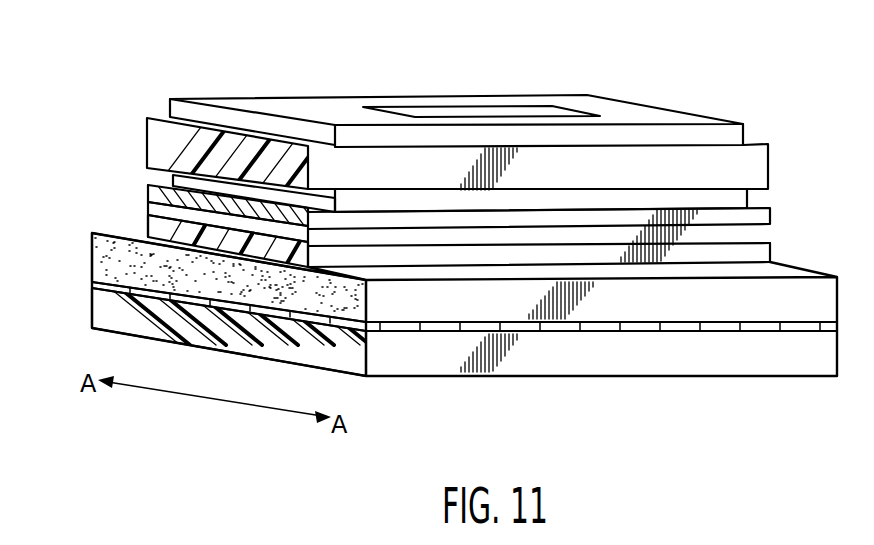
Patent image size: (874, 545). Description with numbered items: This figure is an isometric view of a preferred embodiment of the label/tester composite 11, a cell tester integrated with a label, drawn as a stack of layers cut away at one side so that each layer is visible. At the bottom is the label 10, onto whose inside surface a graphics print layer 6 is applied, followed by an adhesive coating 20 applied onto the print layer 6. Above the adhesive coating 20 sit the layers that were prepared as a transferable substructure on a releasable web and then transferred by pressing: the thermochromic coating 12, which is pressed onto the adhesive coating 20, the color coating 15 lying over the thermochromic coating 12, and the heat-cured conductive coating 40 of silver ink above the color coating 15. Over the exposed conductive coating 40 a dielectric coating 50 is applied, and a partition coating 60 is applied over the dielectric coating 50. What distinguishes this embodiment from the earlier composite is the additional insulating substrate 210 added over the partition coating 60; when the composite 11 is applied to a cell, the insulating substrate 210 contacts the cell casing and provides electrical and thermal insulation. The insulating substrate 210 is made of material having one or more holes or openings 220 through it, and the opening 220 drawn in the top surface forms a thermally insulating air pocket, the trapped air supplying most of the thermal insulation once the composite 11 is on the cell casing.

The graphics print layer 6 is at (90, 278).
The label 10 is at (90, 310).
The label/tester composite 11 is at (546, 382).
The thermochromic coating 12 is at (147, 225).
The color coating 15 is at (147, 210).
The adhesive coating 20 is at (290, 297).
The conductive coating 40 is at (147, 195).
The dielectric coating 50 is at (173, 177).
The partition coating 60 is at (147, 136).
The insulating substrate 210 is at (313, 98).
The opening 220 is at (465, 102).